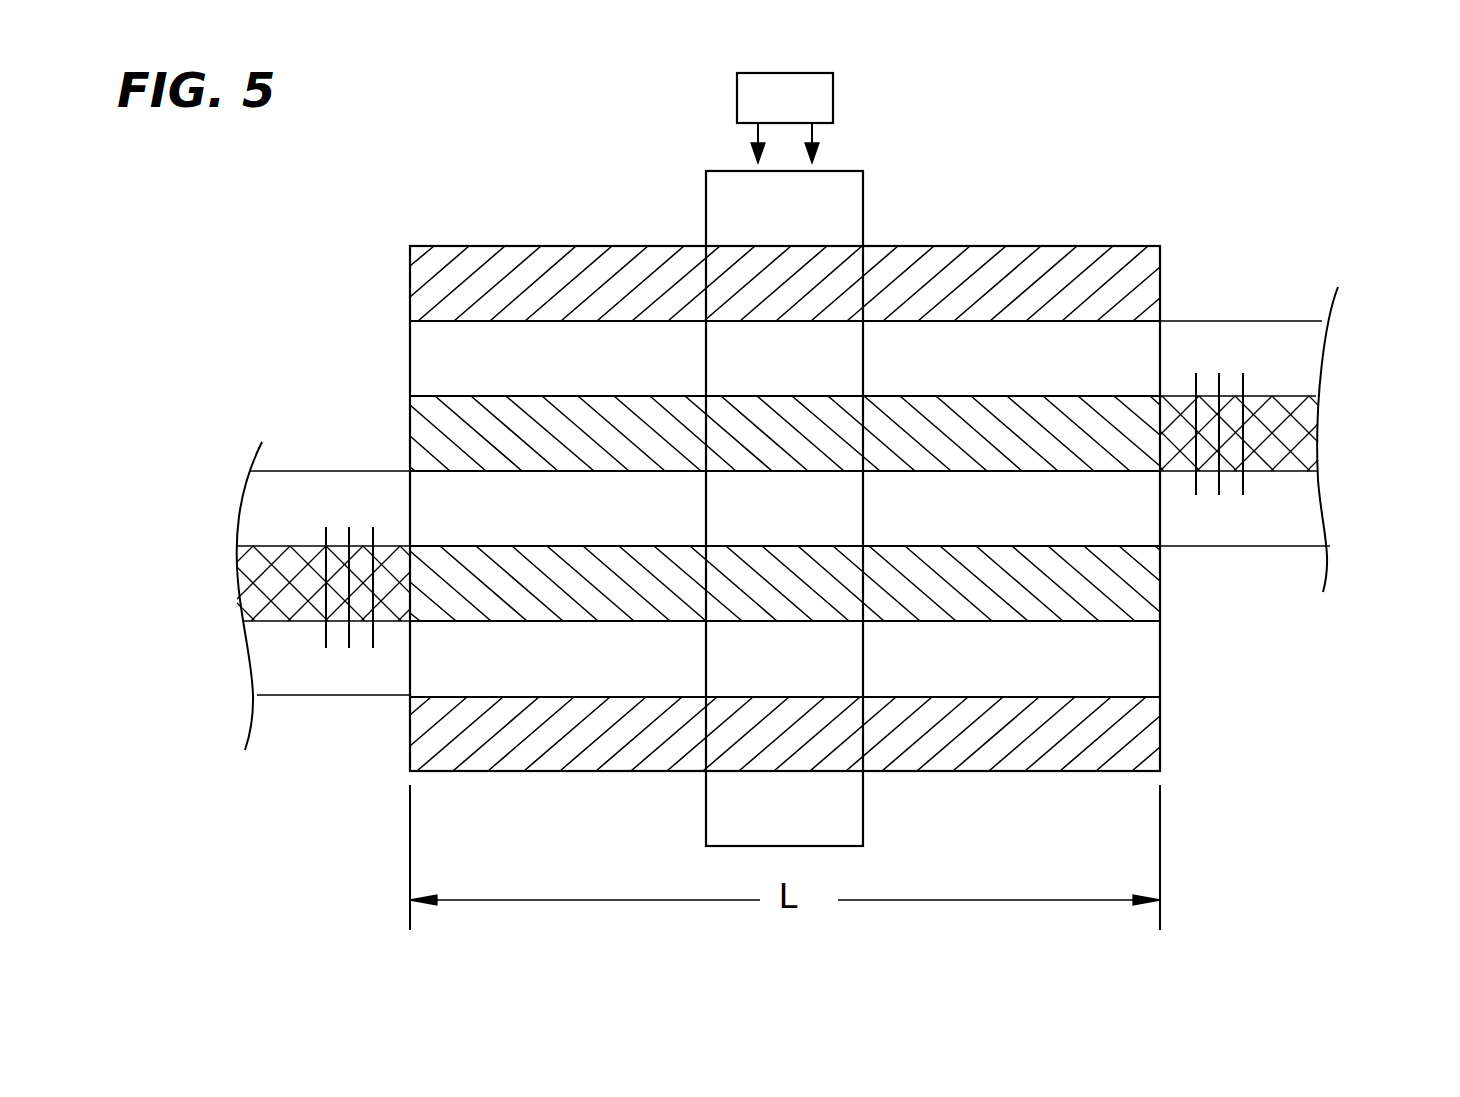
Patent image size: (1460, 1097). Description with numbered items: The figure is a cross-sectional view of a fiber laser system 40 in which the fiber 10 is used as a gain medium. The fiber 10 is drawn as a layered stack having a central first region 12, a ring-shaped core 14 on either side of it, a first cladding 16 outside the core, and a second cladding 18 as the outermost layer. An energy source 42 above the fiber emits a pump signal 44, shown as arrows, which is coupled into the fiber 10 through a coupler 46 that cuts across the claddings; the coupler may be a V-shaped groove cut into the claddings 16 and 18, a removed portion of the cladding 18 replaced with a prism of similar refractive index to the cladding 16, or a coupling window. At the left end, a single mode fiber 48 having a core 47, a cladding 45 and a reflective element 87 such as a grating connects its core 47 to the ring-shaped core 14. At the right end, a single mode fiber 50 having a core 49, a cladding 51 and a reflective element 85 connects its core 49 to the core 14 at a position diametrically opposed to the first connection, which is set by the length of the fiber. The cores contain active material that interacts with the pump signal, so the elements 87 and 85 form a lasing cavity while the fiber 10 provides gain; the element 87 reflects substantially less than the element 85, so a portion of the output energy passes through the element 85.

The fiber 10 is at (423, 212).
The first region 12 is at (1130, 516).
The ring-shaped core 14 is at (410, 422).
The first cladding 16 is at (432, 352).
The second cladding 18 is at (1148, 293).
The fiber laser system 40 is at (1325, 730).
The energy source 42 is at (785, 98).
The pump signal 44 is at (815, 131).
The coupler 46 is at (848, 198).
The cladding 45 is at (285, 677).
The core 47 is at (248, 605).
The single mode fiber 48 is at (195, 537).
The core 49 is at (1306, 453).
The single mode fiber 50 is at (1345, 420).
The cladding 51 is at (1250, 343).
The reflective element 85 is at (1243, 385).
The reflective element 87 is at (373, 636).